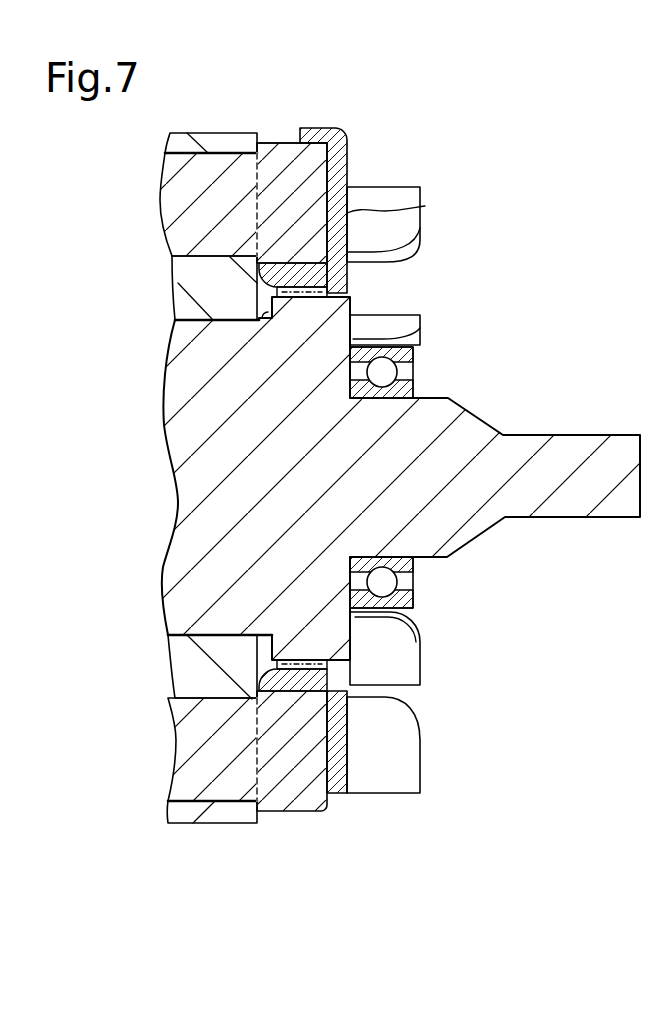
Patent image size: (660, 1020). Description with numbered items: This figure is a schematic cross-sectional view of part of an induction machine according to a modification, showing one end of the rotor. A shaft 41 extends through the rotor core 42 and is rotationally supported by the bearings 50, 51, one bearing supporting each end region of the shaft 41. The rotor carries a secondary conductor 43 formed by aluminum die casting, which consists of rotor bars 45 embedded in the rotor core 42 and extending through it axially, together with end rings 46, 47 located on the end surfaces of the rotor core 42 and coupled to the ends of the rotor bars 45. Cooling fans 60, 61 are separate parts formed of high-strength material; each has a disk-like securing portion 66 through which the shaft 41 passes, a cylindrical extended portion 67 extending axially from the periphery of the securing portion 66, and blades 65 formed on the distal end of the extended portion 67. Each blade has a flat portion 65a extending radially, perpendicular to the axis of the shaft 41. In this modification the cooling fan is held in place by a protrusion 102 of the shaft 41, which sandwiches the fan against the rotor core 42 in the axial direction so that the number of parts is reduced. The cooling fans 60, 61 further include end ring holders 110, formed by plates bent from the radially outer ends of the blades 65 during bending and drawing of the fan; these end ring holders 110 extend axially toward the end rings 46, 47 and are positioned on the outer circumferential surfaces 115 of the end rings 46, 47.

The shaft 41 is at (488, 420).
The rotor core 42 is at (178, 302).
The secondary conductor 43 is at (173, 243).
The rotor bars 45 is at (170, 205).
The end ring 46 is at (284, 436).
The end ring 47 is at (270, 143).
The bearing 50 is at (400, 477).
The bearing 51 is at (370, 398).
The cooling fan 60 is at (405, 409).
The cooling fan 61 is at (450, 161).
The blades 65 is at (420, 187).
The flat portion 65a is at (425, 206).
The securing portion 66 is at (258, 296).
The extended portion 67 is at (300, 292).
The protrusion 102 is at (264, 318).
The end ring holders 110 is at (315, 128).
The outer circumferential surfaces 115 is at (290, 143).